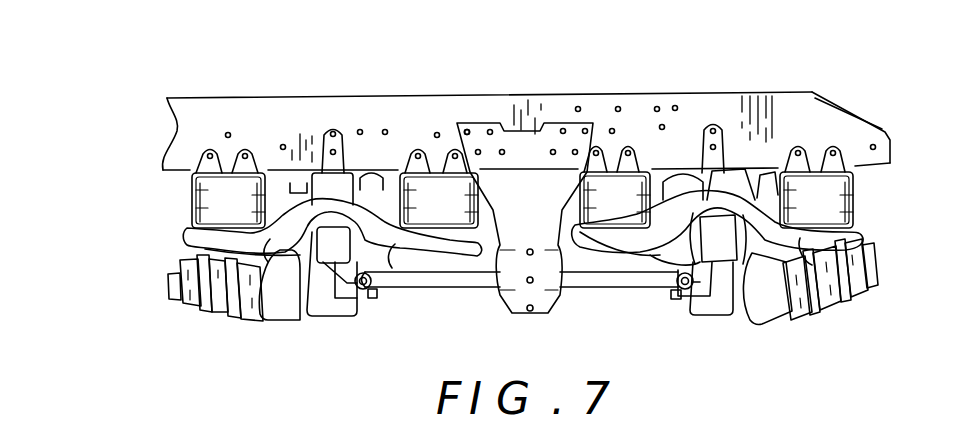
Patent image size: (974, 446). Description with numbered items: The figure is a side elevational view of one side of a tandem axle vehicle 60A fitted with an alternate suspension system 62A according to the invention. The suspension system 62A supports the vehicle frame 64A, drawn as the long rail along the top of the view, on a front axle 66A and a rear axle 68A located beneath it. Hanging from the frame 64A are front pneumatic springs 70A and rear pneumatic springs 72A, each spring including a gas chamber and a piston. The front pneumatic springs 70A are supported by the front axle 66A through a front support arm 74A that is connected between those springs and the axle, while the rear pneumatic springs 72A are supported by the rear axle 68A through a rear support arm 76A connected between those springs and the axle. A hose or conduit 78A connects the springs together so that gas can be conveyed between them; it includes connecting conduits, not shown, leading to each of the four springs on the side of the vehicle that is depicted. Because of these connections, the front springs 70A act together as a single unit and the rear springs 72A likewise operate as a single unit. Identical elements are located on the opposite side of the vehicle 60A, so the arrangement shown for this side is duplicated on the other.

The tandem axle vehicle 60A is at (452, 60).
The suspension system 62A is at (628, 337).
The vehicle frame 64A is at (220, 108).
The front axle 66A is at (318, 303).
The rear axle 68A is at (742, 303).
The front pneumatic springs 70A is at (192, 220).
The rear pneumatic springs 72A is at (652, 170).
The front support arm 74A is at (430, 288).
The rear support arm 76A is at (833, 237).
The hose or conduit 78A is at (563, 170).